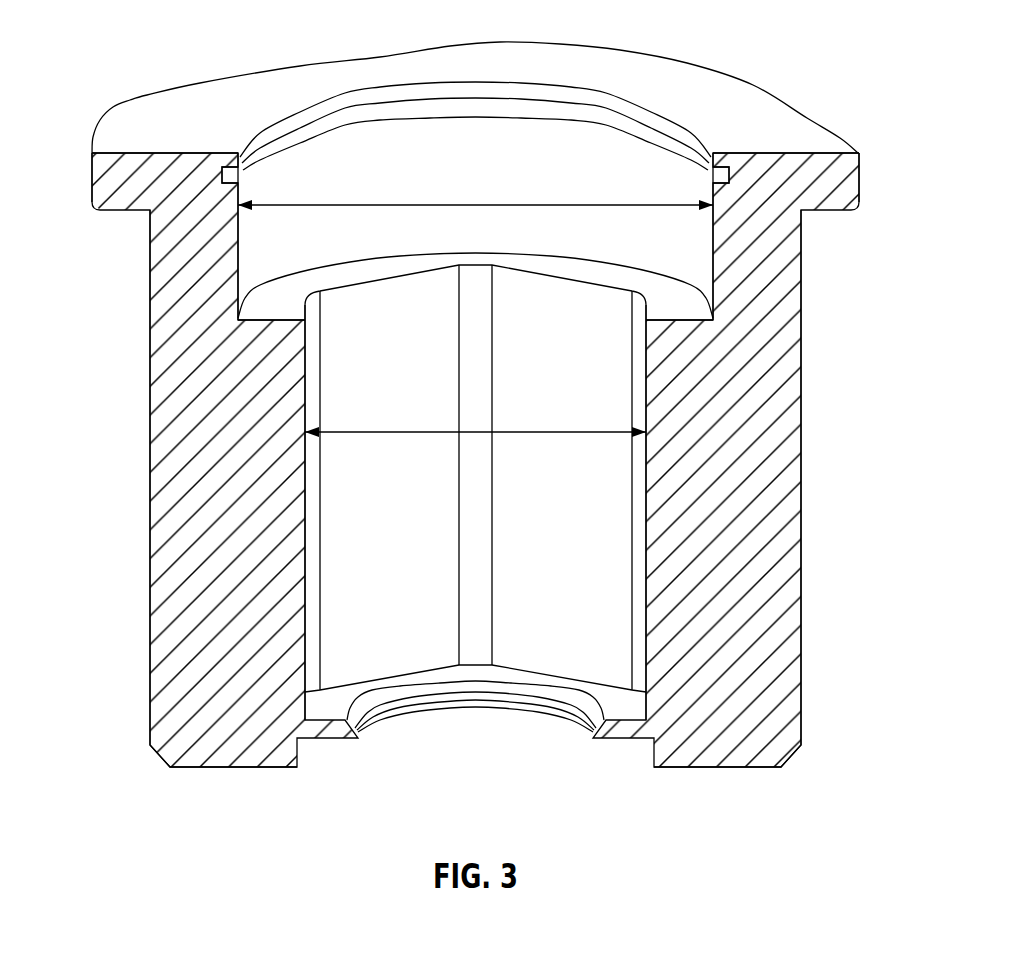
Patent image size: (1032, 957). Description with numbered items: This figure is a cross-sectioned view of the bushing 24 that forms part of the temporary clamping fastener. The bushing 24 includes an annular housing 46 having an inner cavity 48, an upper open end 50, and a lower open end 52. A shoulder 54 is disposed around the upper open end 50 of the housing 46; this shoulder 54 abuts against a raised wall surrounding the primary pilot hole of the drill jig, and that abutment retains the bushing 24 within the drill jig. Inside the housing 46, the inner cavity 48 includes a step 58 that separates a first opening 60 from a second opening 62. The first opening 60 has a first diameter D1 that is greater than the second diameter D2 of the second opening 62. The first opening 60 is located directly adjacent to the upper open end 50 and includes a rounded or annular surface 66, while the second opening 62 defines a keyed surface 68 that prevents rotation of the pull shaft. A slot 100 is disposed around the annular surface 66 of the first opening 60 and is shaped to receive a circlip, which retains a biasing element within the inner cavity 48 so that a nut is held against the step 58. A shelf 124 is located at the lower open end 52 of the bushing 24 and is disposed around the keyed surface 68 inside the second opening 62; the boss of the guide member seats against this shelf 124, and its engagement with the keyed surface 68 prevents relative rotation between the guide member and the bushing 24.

The bushing 24 is at (735, 450).
The annular housing 46 is at (242, 611).
The inner cavity 48 is at (605, 573).
The upper open end 50 is at (792, 117).
The lower open end 52 is at (792, 765).
The shoulder 54 is at (118, 170).
The step 58 is at (681, 333).
The first opening 60 is at (730, 303).
The second opening 62 is at (283, 338).
The annular surface 66 is at (598, 181).
The keyed surface 68 is at (417, 359).
The slot 100 is at (215, 177).
The shelf 124 is at (625, 728).
The first diameter D1 is at (477, 205).
The second diameter D2 is at (445, 432).